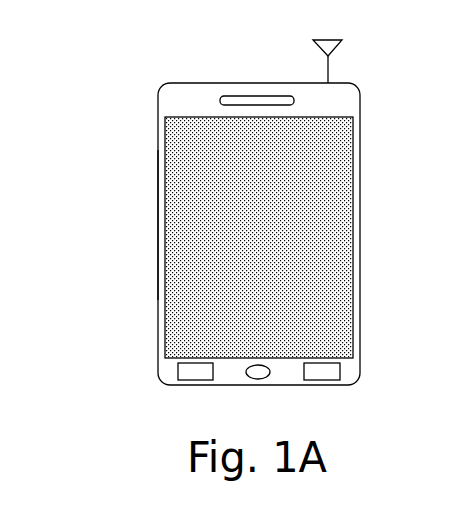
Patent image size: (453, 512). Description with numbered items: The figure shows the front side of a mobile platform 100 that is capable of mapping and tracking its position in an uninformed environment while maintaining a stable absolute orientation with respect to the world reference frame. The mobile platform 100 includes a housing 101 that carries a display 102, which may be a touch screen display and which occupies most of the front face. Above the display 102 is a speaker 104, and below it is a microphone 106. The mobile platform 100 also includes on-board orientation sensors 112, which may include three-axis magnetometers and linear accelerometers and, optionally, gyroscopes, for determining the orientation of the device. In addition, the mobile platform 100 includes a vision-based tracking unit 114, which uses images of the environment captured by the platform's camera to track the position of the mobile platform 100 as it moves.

The mobile platform 100 is at (146, 54).
The housing 101 is at (158, 262).
The display 102 is at (353, 243).
The speaker 104 is at (220, 100).
The microphone 106 is at (248, 377).
The on-board orientation sensors 112 is at (340, 369).
The vision-based tracking unit 114 is at (178, 372).